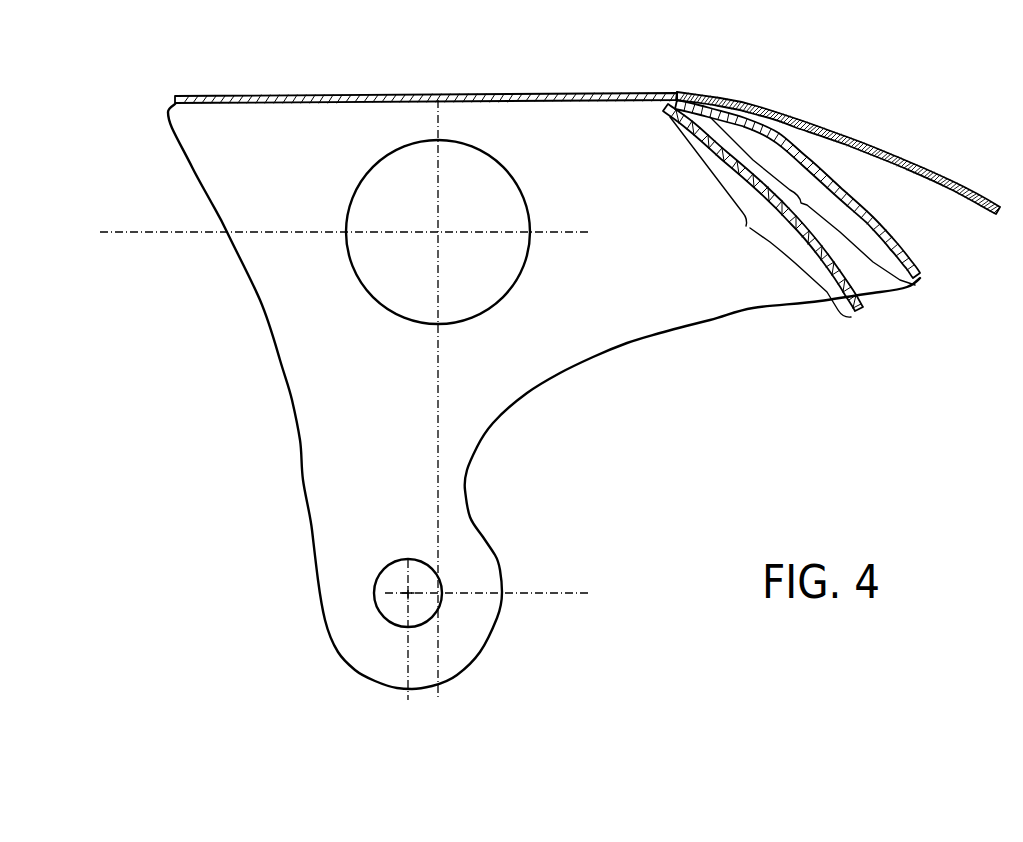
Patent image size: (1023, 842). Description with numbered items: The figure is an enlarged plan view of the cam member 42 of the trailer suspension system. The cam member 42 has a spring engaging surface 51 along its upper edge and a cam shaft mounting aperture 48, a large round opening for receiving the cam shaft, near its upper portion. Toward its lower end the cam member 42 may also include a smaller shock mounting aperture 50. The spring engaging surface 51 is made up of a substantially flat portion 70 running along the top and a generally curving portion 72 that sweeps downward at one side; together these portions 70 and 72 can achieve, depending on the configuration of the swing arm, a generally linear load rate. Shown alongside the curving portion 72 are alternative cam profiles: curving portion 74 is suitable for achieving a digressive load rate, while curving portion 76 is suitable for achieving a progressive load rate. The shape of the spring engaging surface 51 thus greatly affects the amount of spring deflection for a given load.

The cam member 42 is at (623, 313).
The cam shaft mounting aperture 48 is at (465, 160).
The shock mounting aperture 50 is at (393, 616).
The spring engaging surface 51 is at (677, 92).
The substantially flat portion 70 is at (675, 87).
The generally curving portion 72 is at (897, 289).
The curving portion 74 is at (763, 207).
The curving portion 76 is at (700, 86).